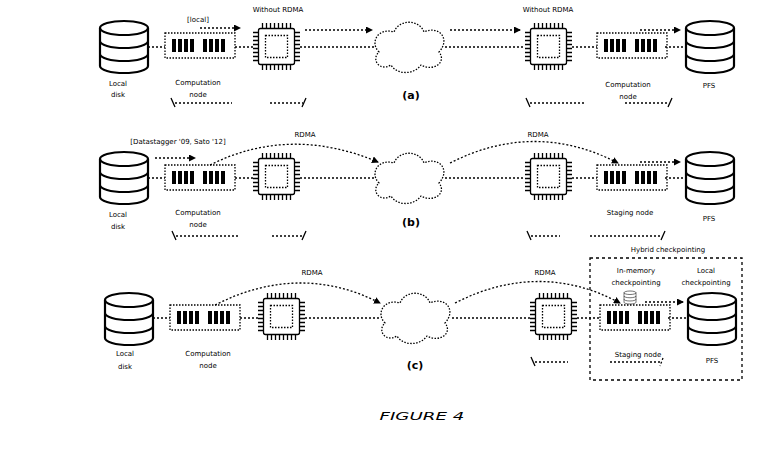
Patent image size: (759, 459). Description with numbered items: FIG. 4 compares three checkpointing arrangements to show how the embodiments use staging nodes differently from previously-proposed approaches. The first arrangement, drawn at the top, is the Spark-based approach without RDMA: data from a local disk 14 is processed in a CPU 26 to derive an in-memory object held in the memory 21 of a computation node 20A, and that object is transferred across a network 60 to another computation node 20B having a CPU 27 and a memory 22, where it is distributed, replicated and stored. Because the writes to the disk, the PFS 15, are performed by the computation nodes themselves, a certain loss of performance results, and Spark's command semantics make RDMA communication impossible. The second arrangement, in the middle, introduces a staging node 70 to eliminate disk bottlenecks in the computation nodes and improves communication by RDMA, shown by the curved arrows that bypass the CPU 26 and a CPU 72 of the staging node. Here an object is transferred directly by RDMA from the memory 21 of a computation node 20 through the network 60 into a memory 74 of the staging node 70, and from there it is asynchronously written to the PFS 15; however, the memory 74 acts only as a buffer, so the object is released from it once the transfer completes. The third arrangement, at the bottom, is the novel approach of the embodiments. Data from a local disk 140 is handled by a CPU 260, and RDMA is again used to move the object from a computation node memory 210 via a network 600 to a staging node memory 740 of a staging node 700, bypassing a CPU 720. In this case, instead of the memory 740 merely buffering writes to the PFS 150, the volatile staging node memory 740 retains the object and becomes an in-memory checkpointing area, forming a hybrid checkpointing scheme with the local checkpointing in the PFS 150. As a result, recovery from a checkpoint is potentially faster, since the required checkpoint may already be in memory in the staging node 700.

The local disk 14 is at (126, 122).
The memory 21 is at (200, 119).
The CPU 26 is at (276, 111).
The network 60 is at (409, 112).
The CPU 27 is at (548, 46).
The memory 22 is at (632, 53).
The PFS 15 is at (710, 130).
The computation node 20A is at (238, 103).
The computation node 20B is at (599, 103).
The computation node 20 is at (239, 236).
The CPU 72 is at (548, 176).
The memory 74 is at (632, 185).
The staging node 70 is at (596, 236).
The local disk 140 is at (129, 341).
The computation node memory 210 is at (205, 327).
The CPU 260 is at (281, 316).
The network 600 is at (415, 318).
The CPU 720 is at (553, 316).
The staging node memory 740 is at (635, 327).
The staging node 700 is at (566, 361).
The PFS 150 is at (712, 343).